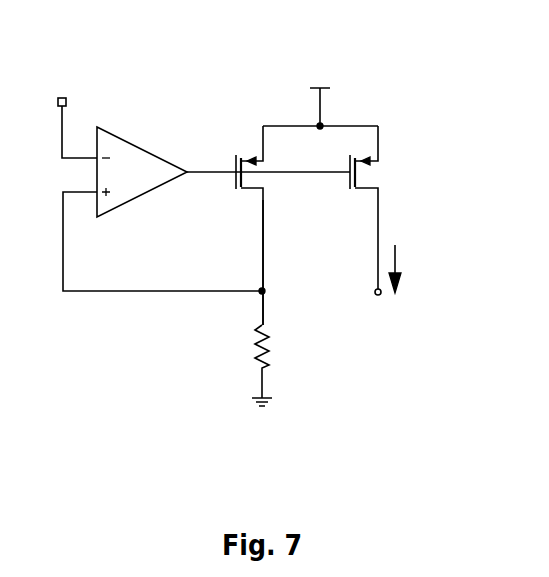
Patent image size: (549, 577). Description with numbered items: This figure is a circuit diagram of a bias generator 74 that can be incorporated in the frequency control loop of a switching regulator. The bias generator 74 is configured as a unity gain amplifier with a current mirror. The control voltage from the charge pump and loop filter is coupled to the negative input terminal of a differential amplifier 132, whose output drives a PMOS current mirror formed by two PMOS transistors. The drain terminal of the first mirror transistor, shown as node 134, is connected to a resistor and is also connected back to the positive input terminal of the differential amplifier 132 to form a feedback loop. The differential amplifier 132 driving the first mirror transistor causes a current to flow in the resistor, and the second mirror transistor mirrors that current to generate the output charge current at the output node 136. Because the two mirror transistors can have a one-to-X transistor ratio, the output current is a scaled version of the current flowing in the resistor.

The bias generator 74 is at (387, 67).
The differential amplifier 132 is at (143, 197).
The node 134 is at (262, 237).
The output node 136 is at (378, 218).